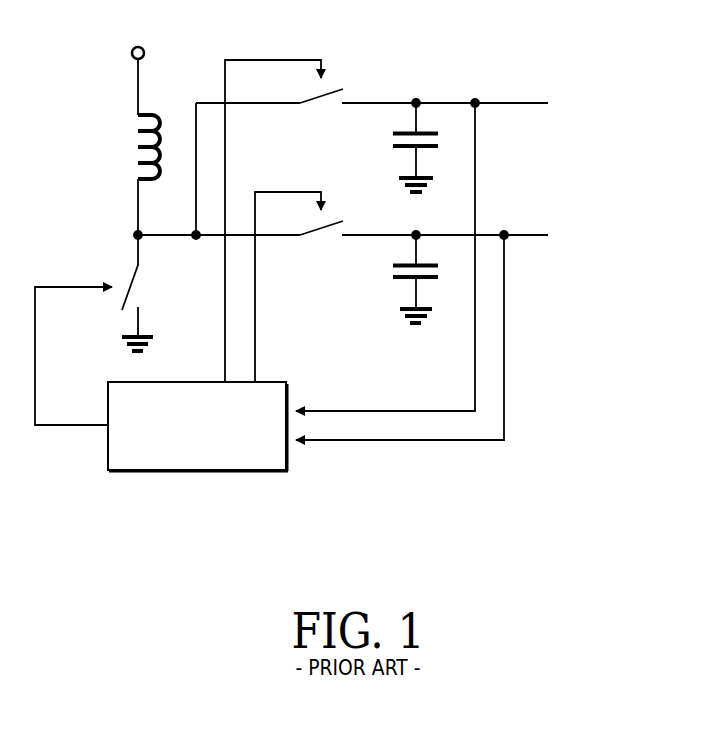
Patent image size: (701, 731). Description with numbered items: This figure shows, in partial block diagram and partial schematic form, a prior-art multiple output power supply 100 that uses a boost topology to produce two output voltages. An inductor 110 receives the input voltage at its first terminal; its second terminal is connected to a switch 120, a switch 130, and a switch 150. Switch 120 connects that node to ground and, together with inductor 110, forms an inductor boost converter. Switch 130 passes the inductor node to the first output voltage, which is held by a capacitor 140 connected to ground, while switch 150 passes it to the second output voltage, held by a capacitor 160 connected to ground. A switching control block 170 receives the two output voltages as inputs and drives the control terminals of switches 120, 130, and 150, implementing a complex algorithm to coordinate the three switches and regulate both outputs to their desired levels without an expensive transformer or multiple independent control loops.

The multiple output power supply 100 is at (376, 572).
The inductor 110 is at (138, 133).
The switch 120 is at (130, 280).
The switch 130 is at (333, 96).
The capacitor 140 is at (393, 142).
The switch 150 is at (333, 228).
The capacitor 160 is at (393, 272).
The switching control block 170 is at (162, 471).